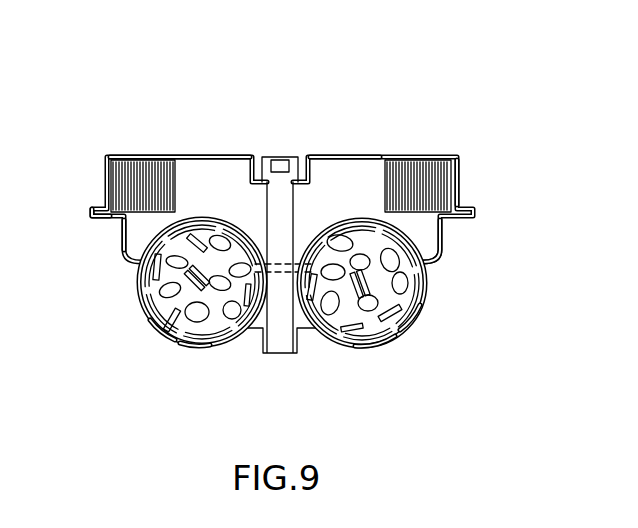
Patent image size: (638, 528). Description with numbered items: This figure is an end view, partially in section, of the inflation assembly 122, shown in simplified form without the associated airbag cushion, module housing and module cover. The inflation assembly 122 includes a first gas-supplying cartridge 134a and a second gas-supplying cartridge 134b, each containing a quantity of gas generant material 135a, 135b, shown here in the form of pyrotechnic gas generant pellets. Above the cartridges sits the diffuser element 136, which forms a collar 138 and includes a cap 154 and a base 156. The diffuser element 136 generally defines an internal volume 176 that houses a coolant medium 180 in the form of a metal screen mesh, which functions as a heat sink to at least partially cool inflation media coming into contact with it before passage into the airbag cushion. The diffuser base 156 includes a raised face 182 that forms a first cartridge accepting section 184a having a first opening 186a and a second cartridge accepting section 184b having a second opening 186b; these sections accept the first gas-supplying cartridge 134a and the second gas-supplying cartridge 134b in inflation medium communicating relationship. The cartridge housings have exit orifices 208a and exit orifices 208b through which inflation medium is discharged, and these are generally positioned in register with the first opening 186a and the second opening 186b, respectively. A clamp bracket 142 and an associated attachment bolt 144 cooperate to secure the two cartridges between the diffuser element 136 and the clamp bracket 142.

The inflation assembly 122 is at (488, 118).
The diffuser element 136 is at (237, 156).
The coolant medium 180 is at (134, 182).
The cap 154 is at (460, 177).
The collar 138 is at (90, 222).
The raised face 182 is at (123, 254).
The base 156 is at (443, 250).
The attachment bolt 144 is at (282, 340).
The first cartridge accepting section 184a is at (203, 218).
The first opening 186a is at (199, 218).
The second cartridge accepting section 184b is at (348, 216).
The second opening 186b is at (360, 238).
The internal volume 176 is at (356, 183).
The first gas-supplying cartridge 134a is at (165, 298).
The exit orifices 208a is at (165, 245).
The gas generant material 135a is at (148, 318).
The clamp bracket 142 is at (192, 353).
The exit orifices 208b is at (318, 247).
The second gas-supplying cartridge 134b is at (415, 318).
The gas generant material 135b is at (357, 222).